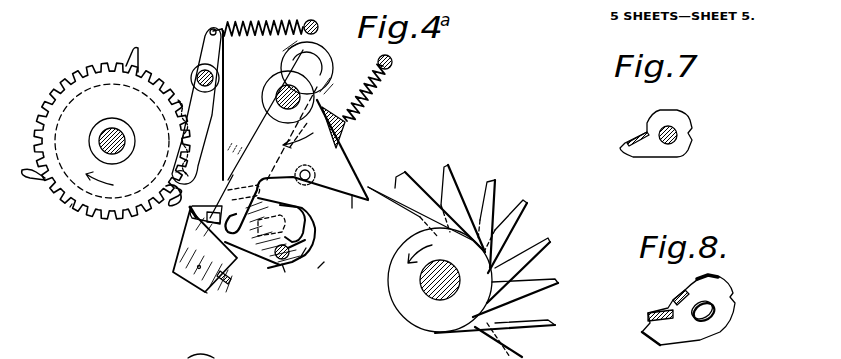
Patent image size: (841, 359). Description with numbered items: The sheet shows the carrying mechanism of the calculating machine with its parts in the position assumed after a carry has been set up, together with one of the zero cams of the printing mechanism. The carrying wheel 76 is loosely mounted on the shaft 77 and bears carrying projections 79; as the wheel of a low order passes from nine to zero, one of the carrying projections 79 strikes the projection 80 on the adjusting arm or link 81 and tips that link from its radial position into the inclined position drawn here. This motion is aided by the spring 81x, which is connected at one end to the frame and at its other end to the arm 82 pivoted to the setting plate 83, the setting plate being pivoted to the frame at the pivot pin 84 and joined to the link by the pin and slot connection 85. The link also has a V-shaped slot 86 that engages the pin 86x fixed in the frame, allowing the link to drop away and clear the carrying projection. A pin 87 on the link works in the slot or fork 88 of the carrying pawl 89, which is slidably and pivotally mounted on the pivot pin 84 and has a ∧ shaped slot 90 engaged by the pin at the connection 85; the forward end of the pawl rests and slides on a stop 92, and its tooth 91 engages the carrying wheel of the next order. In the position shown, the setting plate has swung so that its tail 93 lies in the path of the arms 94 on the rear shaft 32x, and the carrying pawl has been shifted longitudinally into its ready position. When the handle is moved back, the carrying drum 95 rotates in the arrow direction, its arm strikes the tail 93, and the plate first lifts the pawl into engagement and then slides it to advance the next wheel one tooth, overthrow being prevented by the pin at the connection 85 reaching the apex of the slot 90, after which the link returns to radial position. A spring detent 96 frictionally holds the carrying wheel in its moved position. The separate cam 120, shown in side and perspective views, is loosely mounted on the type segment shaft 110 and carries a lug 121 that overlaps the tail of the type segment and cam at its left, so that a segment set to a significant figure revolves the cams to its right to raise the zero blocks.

In FIG. 4A, the shaft 77 is at (103, 135).
In FIG. 4A, the carrying projections 79 is at (134, 60).
In FIG. 4A, the carrying wheels 76 is at (70, 207).
In FIG. 4A, the tooth 91 is at (176, 172).
In FIG. 4A, the spring detent 96 is at (190, 100).
In FIG. 4A, the setting plate 83 is at (267, 132).
In FIG. 4A, the pivot pin 84 is at (282, 95).
In FIG. 4A, the ∧ shaped slot 90 is at (236, 172).
In FIG. 4A, the arm 82 is at (343, 140).
In FIG. 4A, the spring 81x is at (377, 98).
In FIG. 4A, the tail 93 is at (388, 208).
In FIG. 4A, the pin 87 is at (310, 246).
In FIG. 4A, the slot or fork 88 is at (302, 258).
In FIG. 4A, the V-shaped slot 86 is at (318, 268).
In FIG. 4A, the pin 86x is at (285, 272).
In FIG. 4A, the projection 80 is at (200, 213).
In FIG. 4A, the carrying pawl 89 is at (173, 272).
In FIG. 4A, the stops 92 is at (207, 293).
In FIG. 4A, the pin and slot connection 85 is at (248, 260).
In FIG. 4A, the adjusting arm or link 81 is at (263, 262).
In FIG. 4A, the carrying drum 95 is at (400, 286).
In FIG. 4A, the rear shaft 32x is at (425, 290).
In FIG. 4A, the arms 94 is at (454, 261).
In FIG. 7, the cam 120 is at (692, 120).
In FIG. 8, the cam 120 is at (723, 279).
In FIG. 7, the type segment shaft 110 is at (675, 142).
In FIG. 7, the lugs 121 is at (632, 138).
In FIG. 8, the lugs 121 is at (658, 313).